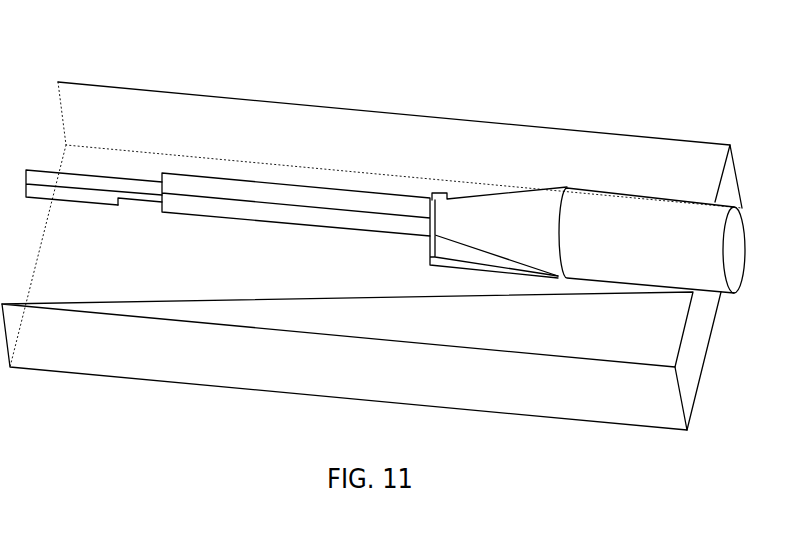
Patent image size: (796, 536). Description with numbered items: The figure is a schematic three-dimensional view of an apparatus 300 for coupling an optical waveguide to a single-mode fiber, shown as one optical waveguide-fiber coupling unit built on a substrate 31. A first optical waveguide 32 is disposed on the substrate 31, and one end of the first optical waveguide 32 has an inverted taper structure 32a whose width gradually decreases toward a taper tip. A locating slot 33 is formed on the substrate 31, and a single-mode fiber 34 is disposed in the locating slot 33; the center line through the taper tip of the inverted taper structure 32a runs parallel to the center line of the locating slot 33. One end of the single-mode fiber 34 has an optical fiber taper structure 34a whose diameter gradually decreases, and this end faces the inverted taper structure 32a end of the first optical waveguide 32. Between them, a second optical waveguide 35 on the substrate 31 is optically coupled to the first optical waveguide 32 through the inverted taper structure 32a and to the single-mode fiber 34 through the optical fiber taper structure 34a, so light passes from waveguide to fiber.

The apparatus 300 is at (73, 50).
The substrate 31 is at (336, 136).
The first optical waveguide 32 is at (60, 196).
The inverted taper structure 32a is at (129, 199).
The second optical waveguide 35 is at (300, 218).
The optical fiber taper structure 34a is at (485, 215).
The locating slot 33 is at (488, 267).
The single-mode fiber 34 is at (618, 207).